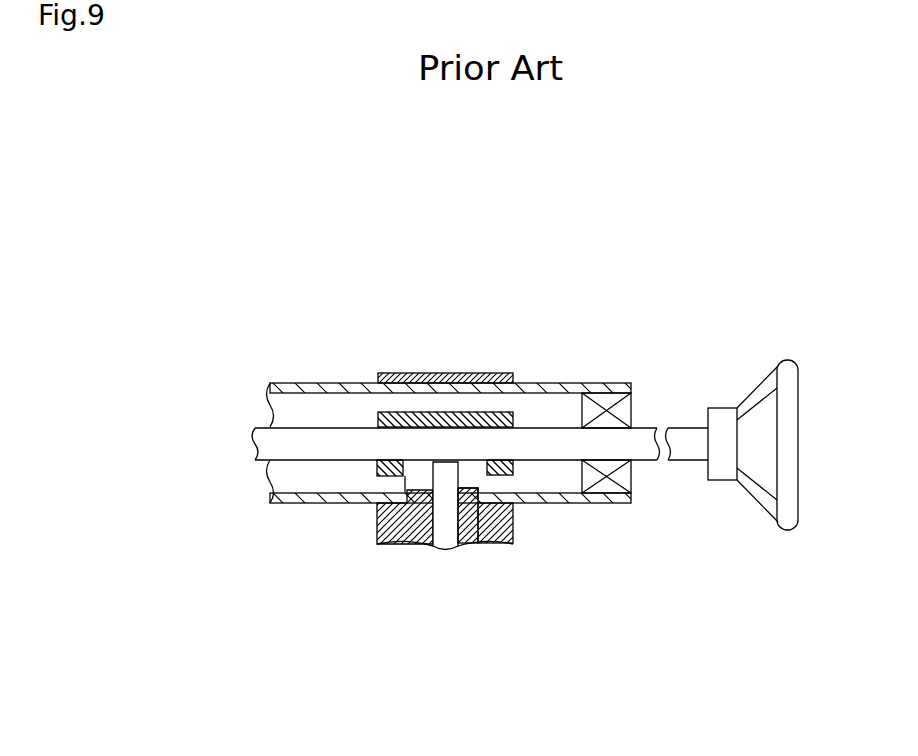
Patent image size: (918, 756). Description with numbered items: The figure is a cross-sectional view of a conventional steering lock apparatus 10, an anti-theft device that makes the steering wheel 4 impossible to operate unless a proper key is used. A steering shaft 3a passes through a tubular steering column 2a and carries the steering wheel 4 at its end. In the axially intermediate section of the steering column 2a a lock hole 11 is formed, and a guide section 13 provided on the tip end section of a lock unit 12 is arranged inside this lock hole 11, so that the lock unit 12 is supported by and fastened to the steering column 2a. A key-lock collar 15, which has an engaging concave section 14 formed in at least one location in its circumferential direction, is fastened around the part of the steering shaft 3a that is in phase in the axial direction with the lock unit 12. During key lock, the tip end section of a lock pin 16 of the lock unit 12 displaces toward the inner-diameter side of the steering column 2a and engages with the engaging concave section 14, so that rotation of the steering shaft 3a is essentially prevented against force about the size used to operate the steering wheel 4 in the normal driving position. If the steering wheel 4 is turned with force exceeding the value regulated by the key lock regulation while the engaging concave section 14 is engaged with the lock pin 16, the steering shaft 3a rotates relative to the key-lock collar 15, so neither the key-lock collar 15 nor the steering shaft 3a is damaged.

The steering column 2a is at (302, 387).
The steering shaft 3a is at (300, 450).
The steering wheel 4 is at (758, 498).
The steering lock apparatus 10 is at (456, 478).
The lock hole 11 is at (475, 546).
The lock unit 12 is at (513, 531).
The guide section 13 is at (470, 488).
The engaging concave section 14 is at (410, 490).
The key-lock collar 15 is at (499, 410).
The lock pin 16 is at (443, 475).